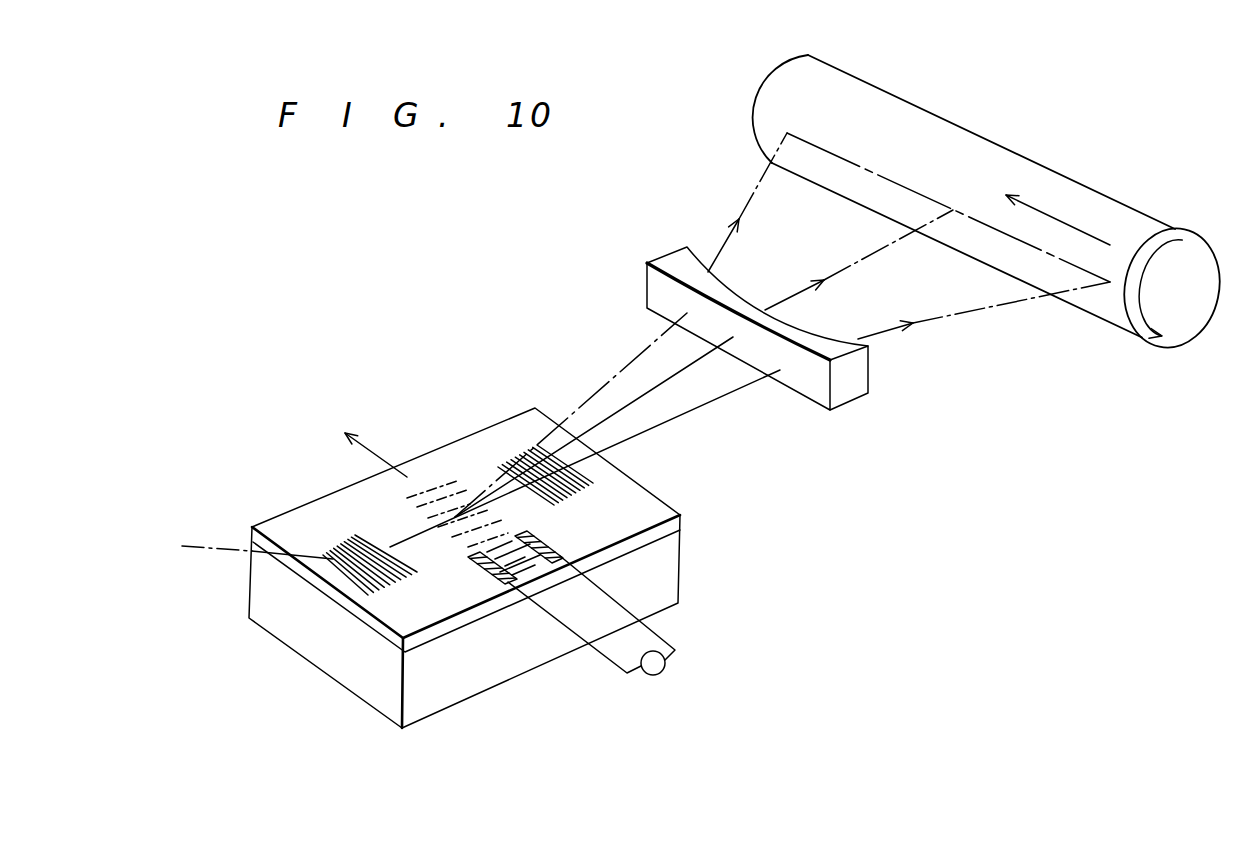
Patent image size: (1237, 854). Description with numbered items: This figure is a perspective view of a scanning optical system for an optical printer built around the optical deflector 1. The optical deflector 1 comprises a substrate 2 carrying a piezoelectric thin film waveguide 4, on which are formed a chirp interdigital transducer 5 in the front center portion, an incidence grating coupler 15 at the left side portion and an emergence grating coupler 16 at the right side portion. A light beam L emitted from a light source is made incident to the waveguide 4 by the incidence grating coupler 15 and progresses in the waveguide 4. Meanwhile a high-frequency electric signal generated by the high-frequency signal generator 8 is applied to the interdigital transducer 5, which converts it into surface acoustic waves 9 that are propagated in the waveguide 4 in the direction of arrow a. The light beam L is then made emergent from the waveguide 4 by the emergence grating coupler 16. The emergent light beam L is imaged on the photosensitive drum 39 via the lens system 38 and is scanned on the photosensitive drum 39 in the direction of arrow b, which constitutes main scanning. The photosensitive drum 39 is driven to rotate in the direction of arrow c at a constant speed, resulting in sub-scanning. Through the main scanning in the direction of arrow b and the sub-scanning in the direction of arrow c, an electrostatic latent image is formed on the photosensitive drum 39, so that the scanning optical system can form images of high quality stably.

The optical deflector 1 is at (395, 405).
The substrate 2 is at (505, 670).
The piezoelectric thin film waveguide 4 is at (390, 610).
The chirp interdigital transducer 5 is at (545, 535).
The high-frequency signal generator 8 is at (667, 667).
The surface acoustic waves 9 is at (437, 484).
The incidence grating coupler 15 is at (358, 560).
The emergence grating coupler 16 is at (545, 452).
The lens system 38 is at (667, 254).
The photosensitive drum 39 is at (758, 82).
The light beam L is at (643, 354).
The direction of surface acoustic wave propagation a is at (376, 440).
The main scanning direction b is at (1058, 220).
The drum rotation direction c is at (1162, 300).